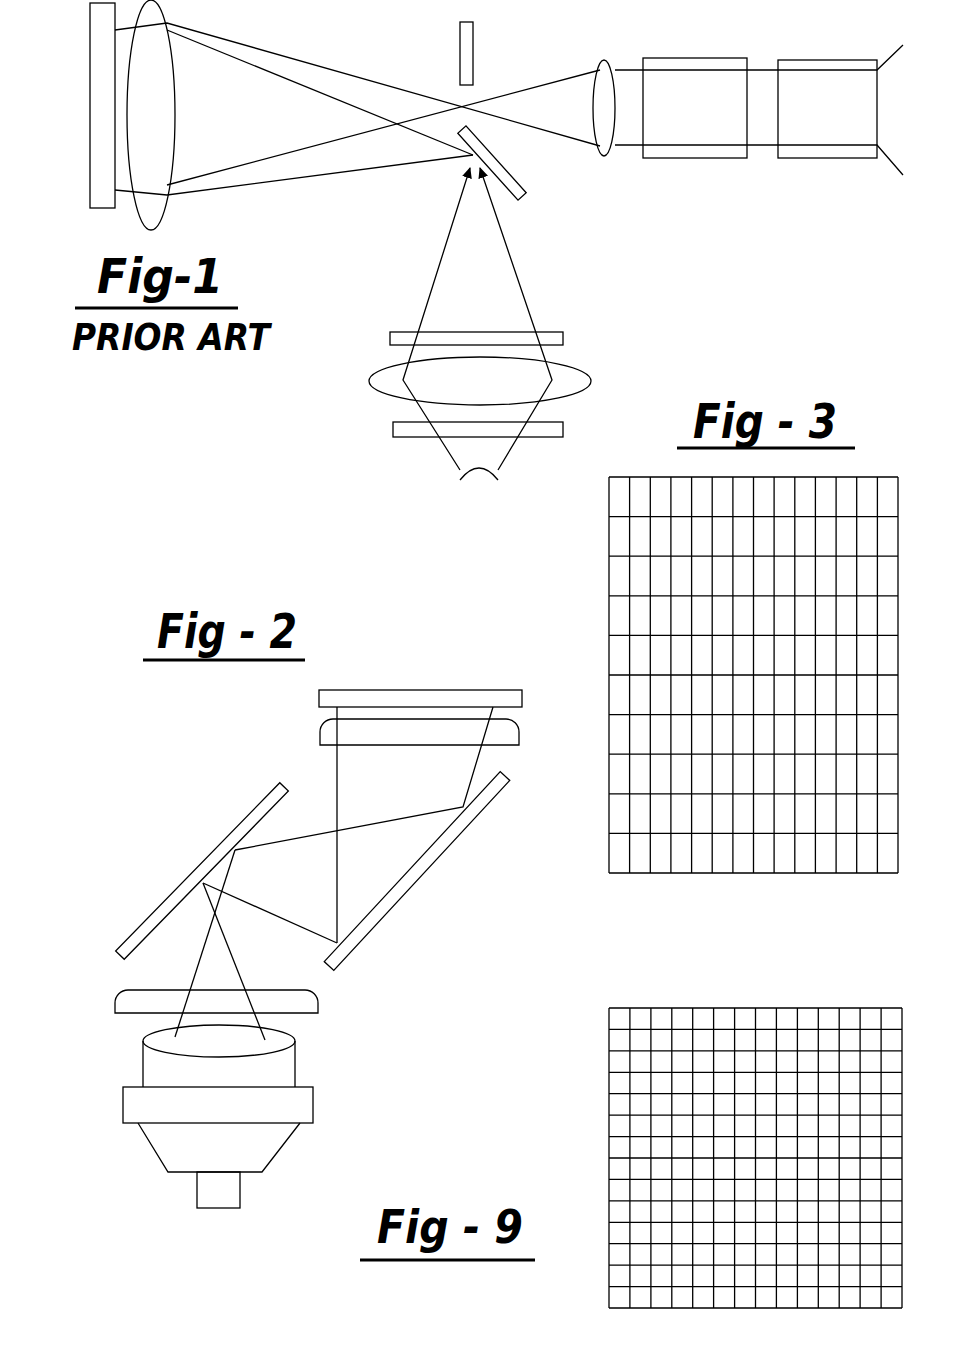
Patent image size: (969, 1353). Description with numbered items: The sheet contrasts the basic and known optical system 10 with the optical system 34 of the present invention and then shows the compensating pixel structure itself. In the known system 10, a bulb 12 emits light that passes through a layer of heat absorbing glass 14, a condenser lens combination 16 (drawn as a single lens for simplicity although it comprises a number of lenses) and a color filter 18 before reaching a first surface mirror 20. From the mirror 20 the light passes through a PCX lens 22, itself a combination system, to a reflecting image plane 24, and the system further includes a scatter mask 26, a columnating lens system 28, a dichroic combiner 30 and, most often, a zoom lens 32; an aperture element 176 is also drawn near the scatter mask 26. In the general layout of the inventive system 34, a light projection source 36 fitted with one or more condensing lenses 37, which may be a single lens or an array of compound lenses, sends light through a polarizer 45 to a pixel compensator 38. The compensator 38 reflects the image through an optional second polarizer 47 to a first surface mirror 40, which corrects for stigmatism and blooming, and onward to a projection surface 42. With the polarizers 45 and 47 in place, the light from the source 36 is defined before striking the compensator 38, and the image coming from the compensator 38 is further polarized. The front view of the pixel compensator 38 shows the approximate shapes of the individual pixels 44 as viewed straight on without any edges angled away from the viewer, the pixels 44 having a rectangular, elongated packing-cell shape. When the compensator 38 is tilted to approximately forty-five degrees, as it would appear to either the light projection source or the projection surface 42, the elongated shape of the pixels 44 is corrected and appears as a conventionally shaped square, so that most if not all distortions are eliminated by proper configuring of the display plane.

In FIG. 1, the system 10 is at (355, 40).
In FIG. 1, the bulb 12 is at (460, 483).
In FIG. 1, the layer of heat absorbing glass 14 is at (560, 438).
In FIG. 1, the condenser lens combination 16 is at (572, 372).
In FIG. 1, the color filter 18 is at (548, 332).
In FIG. 1, the first surface mirror 20 is at (510, 163).
In FIG. 1, the PCX lens 22 is at (172, 9).
In FIG. 1, the reflecting image plane 24 is at (98, 13).
In FIG. 1, the scatter mask 26 is at (404, 6).
In FIG. 1, the columnating lens system 28 is at (598, 62).
In FIG. 1, the dichroic combiner 30 is at (702, 58).
In FIG. 1, the zoom lens 32 is at (825, 60).
In FIG. 2, the optical system 34 is at (98, 1080).
In FIG. 2, the light projection source 36 is at (278, 1070).
In FIG. 2, the condensing lens 37 is at (275, 1040).
In FIG. 2, the pixel compensator 38 is at (215, 842).
In FIG. 3, the pixel compensator 38 is at (681, 950).
In FIG. 9, the pixel compensator 38 is at (703, 1023).
In FIG. 2, the first surface mirror 40 is at (453, 832).
In FIG. 2, the projection surface 42 is at (432, 692).
In FIG. 3, the individual pixels 44 is at (615, 540).
In FIG. 9, the individual pixels 44 is at (618, 1089).
In FIG. 2, the polarizer 45 is at (125, 1000).
In FIG. 2, the second polarizer 47 is at (567, 713).
In FIG. 1, the aperture plate 176 is at (458, 36).